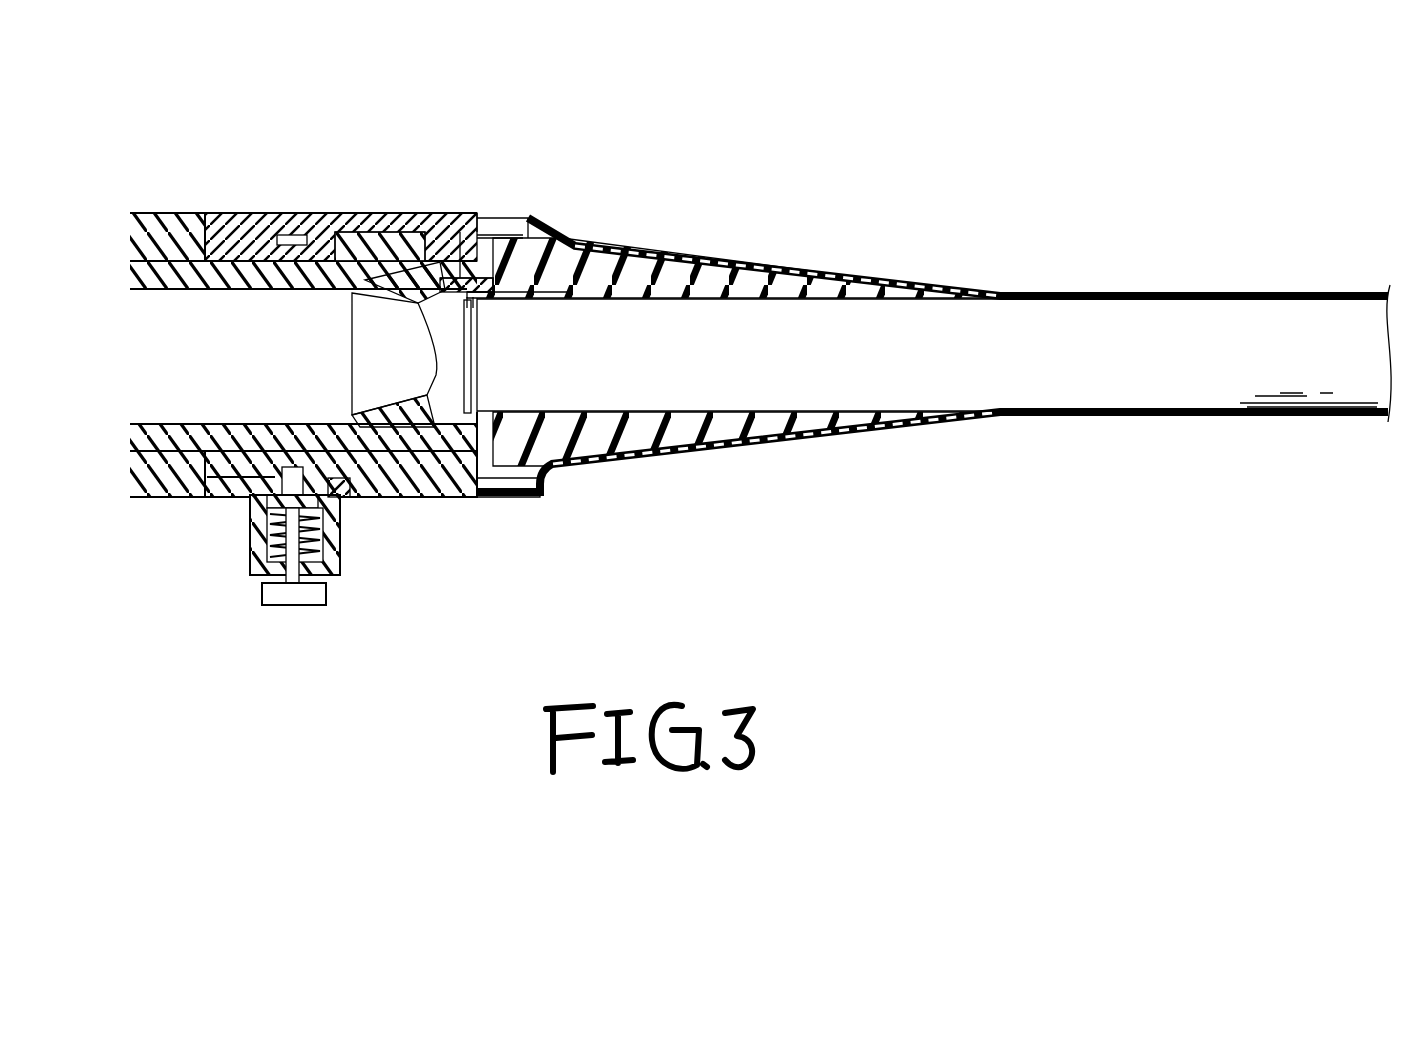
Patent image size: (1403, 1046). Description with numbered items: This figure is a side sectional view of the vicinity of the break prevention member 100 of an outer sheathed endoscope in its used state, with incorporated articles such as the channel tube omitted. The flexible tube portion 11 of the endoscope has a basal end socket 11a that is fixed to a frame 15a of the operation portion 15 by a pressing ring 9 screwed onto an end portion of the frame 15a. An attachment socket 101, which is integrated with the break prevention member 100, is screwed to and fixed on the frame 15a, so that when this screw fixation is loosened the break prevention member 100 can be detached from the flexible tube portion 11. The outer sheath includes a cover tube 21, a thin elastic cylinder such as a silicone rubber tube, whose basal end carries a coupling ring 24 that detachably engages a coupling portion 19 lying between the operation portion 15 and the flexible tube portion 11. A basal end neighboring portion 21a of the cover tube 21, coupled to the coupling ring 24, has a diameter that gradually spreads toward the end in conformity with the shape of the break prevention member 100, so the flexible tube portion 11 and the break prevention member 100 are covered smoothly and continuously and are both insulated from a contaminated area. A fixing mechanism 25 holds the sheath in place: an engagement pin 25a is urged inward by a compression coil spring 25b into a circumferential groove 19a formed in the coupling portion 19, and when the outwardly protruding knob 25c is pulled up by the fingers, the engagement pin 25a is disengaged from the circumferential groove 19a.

The operation portion 15 is at (148, 205).
The frame 15a is at (163, 424).
The coupling portion 19 is at (252, 212).
The circumferential groove 19a is at (285, 424).
The coupling ring 24 is at (343, 212).
The pressing ring 9 is at (422, 212).
The cover tube 21 is at (1250, 292).
The basal end neighboring portion 21a is at (652, 250).
The break prevention member 100 is at (732, 445).
The attachment socket 101 is at (443, 497).
The flexible tube portion 11 is at (1153, 395).
The basal end socket 11a is at (367, 305).
The fixing mechanism 25 is at (245, 585).
The engagement pin 25a is at (343, 495).
The compression coil spring 25b is at (262, 522).
The knob 25c is at (290, 605).